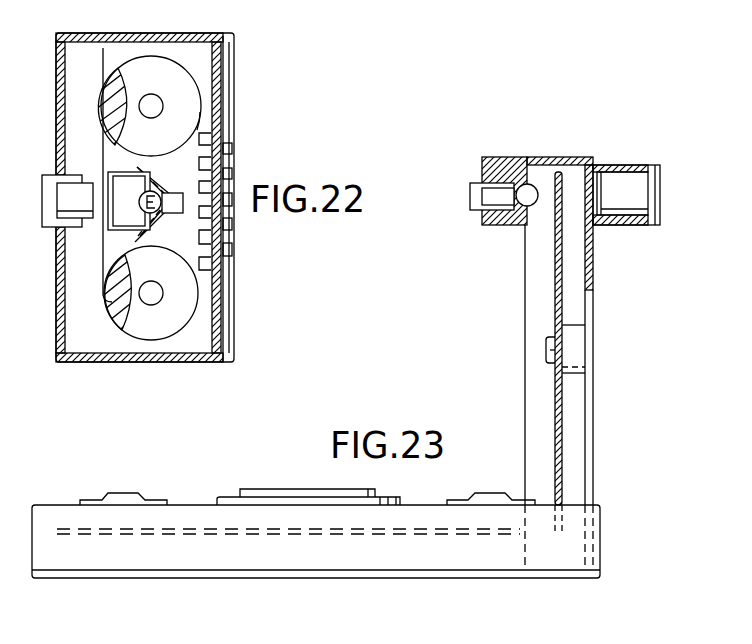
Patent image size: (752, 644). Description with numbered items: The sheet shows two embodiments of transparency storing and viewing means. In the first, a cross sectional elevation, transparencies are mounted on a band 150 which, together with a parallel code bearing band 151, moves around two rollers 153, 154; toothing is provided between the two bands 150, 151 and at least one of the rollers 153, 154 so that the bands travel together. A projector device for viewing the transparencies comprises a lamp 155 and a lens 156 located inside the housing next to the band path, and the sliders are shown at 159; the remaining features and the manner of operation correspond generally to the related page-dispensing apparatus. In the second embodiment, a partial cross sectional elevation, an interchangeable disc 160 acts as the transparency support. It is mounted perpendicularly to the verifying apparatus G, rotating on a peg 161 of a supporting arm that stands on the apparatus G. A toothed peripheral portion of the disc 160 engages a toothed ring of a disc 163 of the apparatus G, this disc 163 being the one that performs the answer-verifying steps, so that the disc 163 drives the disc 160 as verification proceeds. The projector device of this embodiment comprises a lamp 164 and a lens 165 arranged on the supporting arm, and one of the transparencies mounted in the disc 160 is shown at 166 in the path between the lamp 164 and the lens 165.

In FIG. 22, the band 150 is at (103, 258).
In FIG. 22, the code bearing band 151 is at (197, 137).
In FIG. 22, the roller 153 is at (188, 88).
In FIG. 22, the roller 154 is at (188, 320).
In FIG. 22, the lamp 155 is at (135, 188).
In FIG. 22, the lens 156 is at (52, 183).
In FIG. 22, the sliders 159 is at (233, 230).
In FIG. 23, the interchangeable disc 160 is at (557, 282).
In FIG. 23, the peg 161 is at (548, 352).
In FIG. 23, the disc 163 is at (478, 533).
In FIG. 23, the lamp 164 is at (540, 208).
In FIG. 23, the lens 165 is at (655, 170).
In FIG. 23, the transparency 166 is at (563, 198).
In FIG. 23, the verifying apparatus G is at (178, 586).